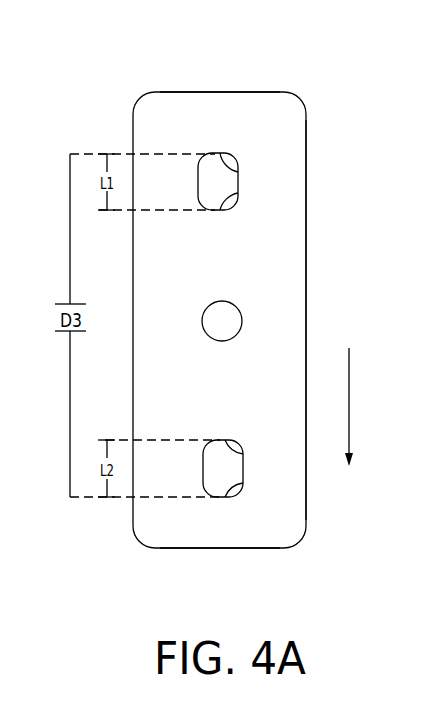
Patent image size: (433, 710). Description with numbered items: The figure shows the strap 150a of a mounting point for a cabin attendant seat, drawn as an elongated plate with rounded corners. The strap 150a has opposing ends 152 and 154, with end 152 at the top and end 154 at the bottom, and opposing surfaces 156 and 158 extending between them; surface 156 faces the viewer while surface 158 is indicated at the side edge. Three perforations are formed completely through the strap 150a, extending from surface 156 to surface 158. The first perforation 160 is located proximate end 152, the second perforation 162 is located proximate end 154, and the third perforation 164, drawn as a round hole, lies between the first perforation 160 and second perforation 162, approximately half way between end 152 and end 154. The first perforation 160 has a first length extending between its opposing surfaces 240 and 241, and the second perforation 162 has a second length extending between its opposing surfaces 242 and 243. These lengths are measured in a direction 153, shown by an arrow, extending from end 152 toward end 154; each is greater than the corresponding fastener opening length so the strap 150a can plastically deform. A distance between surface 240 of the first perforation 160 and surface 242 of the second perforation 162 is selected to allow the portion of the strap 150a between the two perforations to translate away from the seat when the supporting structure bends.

The strap 150a is at (306, 62).
The end 152 is at (193, 92).
The direction 153 is at (346, 395).
The end 154 is at (222, 548).
The surface 156 is at (232, 278).
The surface 158 is at (319, 178).
The first perforation 160 is at (206, 186).
The second perforation 162 is at (203, 468).
The third perforation 164 is at (247, 313).
The surface of first perforation 240 is at (238, 172).
The surface of first perforation 241 is at (238, 193).
The surface of second perforation 242 is at (243, 483).
The surface of second perforation 243 is at (243, 454).